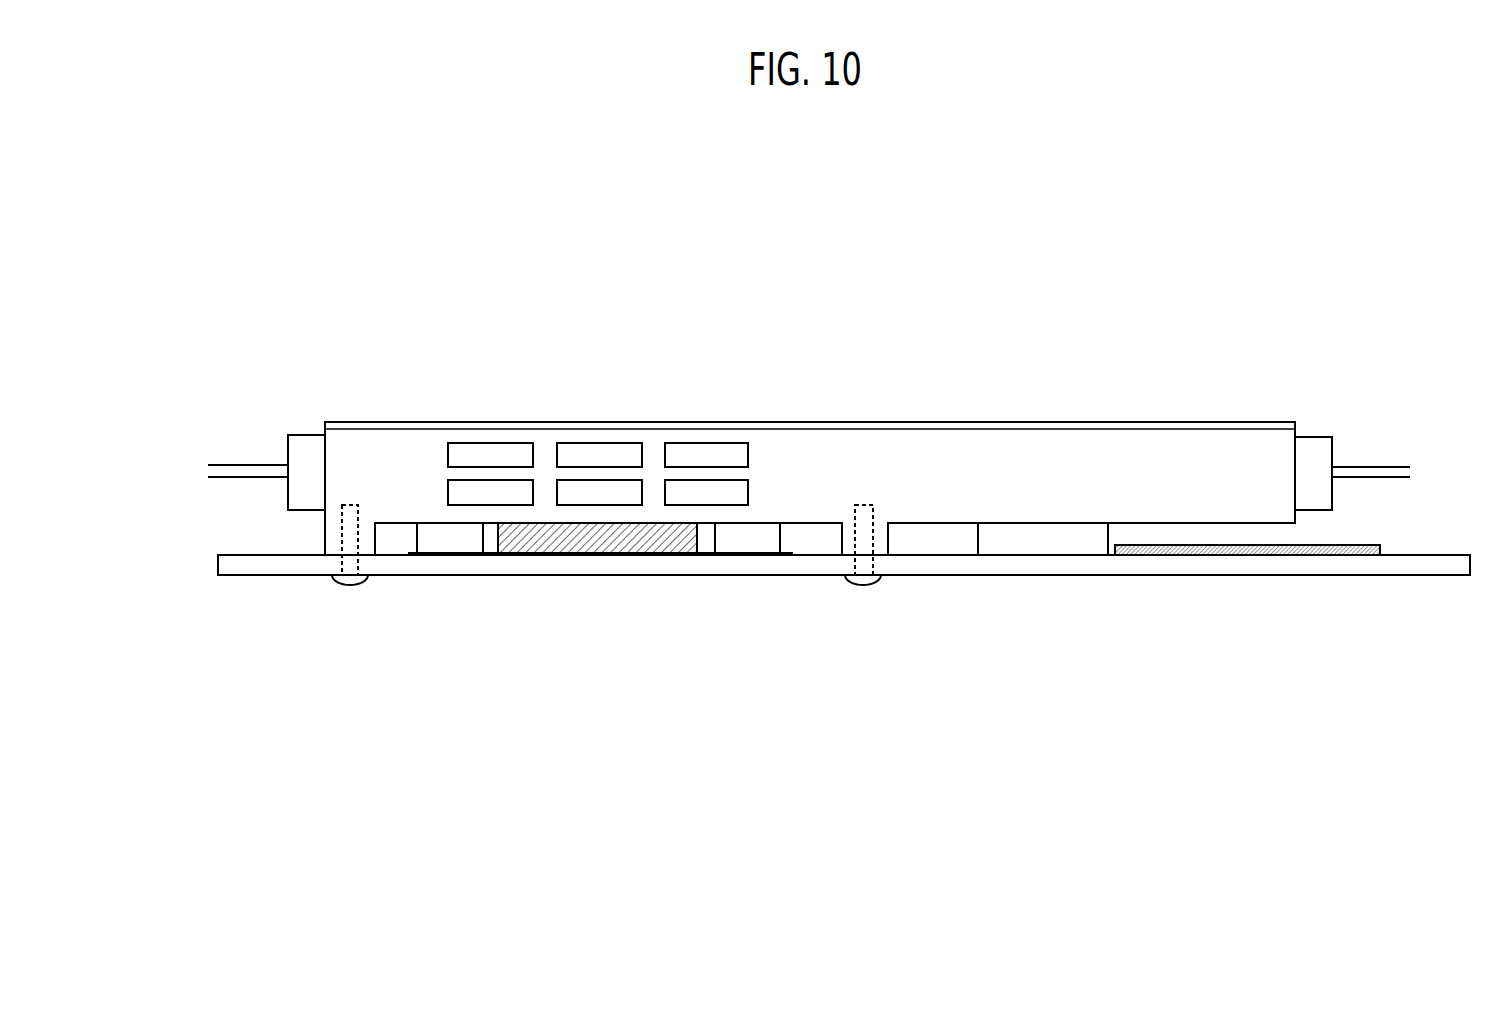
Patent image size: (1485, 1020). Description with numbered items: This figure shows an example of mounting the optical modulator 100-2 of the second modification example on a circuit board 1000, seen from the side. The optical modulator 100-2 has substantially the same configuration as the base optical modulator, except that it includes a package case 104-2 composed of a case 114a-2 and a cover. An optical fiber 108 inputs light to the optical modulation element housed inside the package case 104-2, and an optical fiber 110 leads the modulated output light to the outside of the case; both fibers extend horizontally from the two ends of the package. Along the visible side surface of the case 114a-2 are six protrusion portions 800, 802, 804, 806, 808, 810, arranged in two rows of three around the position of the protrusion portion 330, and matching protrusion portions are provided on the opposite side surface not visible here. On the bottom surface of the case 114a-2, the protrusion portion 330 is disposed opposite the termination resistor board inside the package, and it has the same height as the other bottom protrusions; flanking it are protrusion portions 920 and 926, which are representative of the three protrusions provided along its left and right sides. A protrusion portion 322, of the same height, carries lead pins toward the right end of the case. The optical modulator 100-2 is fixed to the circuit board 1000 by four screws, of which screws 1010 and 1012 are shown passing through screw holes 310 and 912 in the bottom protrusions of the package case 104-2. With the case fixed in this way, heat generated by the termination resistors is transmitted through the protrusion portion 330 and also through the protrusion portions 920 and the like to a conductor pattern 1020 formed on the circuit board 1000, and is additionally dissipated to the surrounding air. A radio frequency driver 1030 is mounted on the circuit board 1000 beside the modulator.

The optical modulator 100-2 is at (797, 501).
The package case 104-2 is at (810, 426).
The case 114a-2 is at (795, 437).
The optical fiber 110 is at (233, 468).
The optical fiber 108 is at (1360, 473).
The protrusion portion 800 is at (488, 457).
The protrusion portion 802 is at (598, 457).
The protrusion portion 804 is at (707, 458).
The protrusion portion 806 is at (516, 497).
The protrusion portion 808 is at (627, 500).
The protrusion portion 810 is at (733, 498).
The protrusion portion 920 is at (450, 538).
The protrusion portion 926 is at (745, 537).
The protrusion portion 330 is at (602, 538).
The conductor pattern 1020 is at (512, 557).
The protrusion portion 322 is at (1028, 542).
The radio frequency driver 1030 is at (1245, 557).
The screw hole 310 is at (340, 537).
The screw hole 912 is at (852, 545).
The screw 1010 is at (348, 587).
The screw 1012 is at (867, 587).
The circuit board 1000 is at (257, 555).